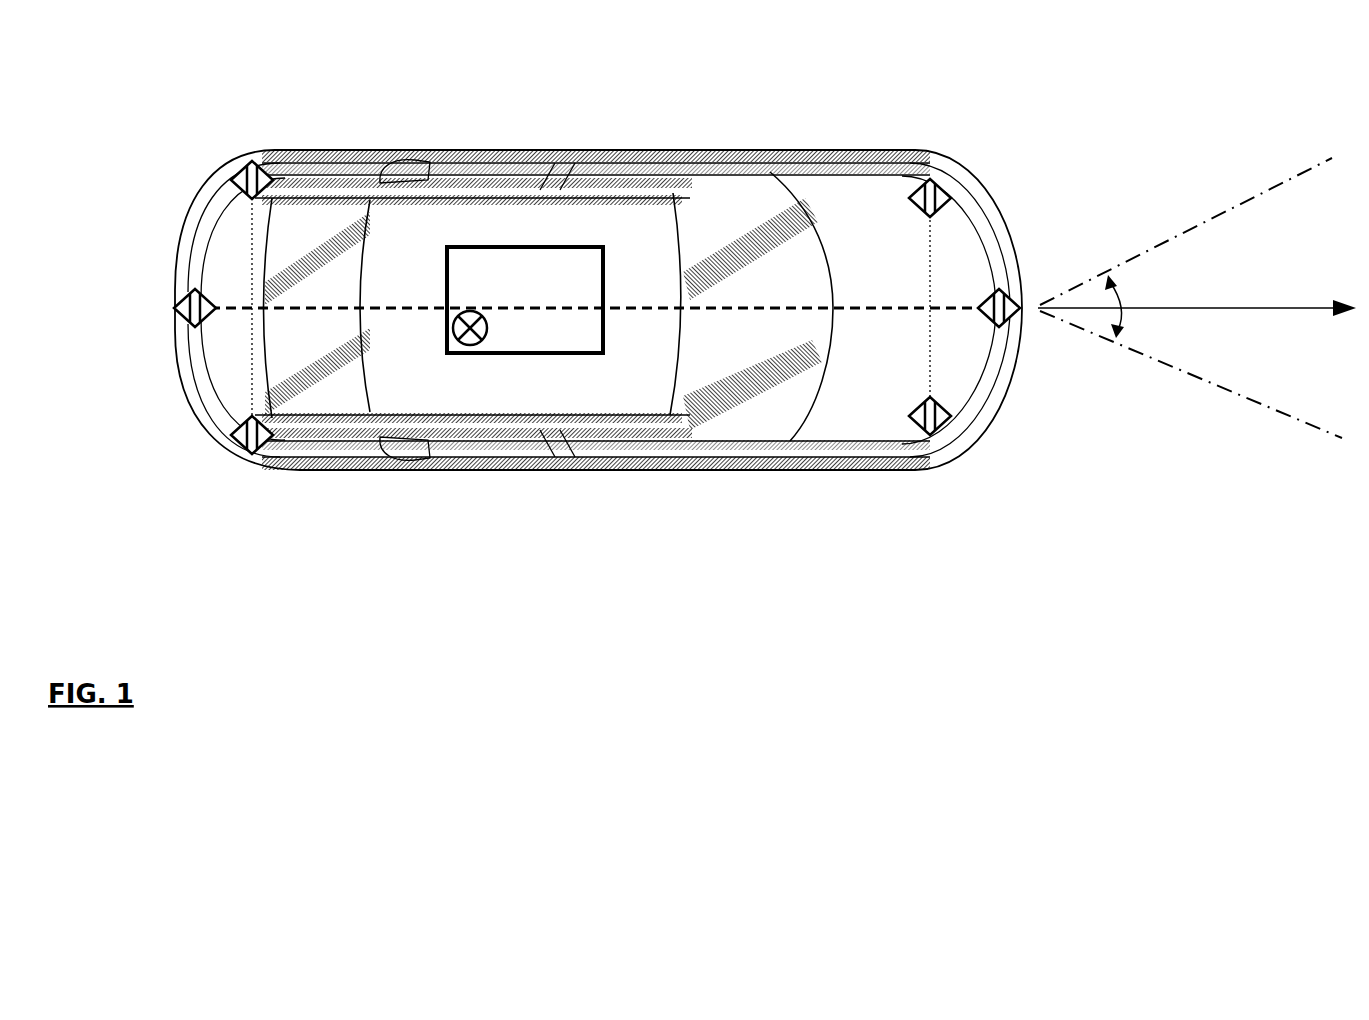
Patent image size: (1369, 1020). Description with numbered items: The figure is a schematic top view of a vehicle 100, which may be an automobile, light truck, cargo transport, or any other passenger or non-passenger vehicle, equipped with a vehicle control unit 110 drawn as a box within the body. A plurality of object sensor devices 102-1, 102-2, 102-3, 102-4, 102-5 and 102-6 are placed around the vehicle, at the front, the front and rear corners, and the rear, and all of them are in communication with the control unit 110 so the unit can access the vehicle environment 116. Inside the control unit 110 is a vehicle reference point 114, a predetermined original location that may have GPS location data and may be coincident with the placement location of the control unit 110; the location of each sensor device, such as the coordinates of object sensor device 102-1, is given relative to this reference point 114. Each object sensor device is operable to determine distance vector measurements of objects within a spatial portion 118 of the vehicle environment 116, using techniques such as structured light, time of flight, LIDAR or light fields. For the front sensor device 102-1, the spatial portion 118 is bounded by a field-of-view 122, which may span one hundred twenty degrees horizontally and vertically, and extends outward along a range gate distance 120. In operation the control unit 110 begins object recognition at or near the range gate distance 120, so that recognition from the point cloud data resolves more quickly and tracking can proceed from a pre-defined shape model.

The vehicle 100 is at (823, 150).
The object sensor device 102-1 is at (1100, 397).
The object sensor device 102-2 is at (925, 212).
The object sensor device 102-3 is at (922, 402).
The object sensor device 102-4 is at (250, 160).
The object sensor device 102-5 is at (178, 290).
The object sensor device 102-6 is at (235, 430).
The vehicle control unit 110 is at (532, 356).
The vehicle reference point 114 is at (447, 330).
The vehicle environment 116 is at (1121, 171).
The spatial portion 118 is at (1280, 192).
The range gate distance 120 is at (1177, 309).
The field-of-view 122 is at (1082, 271).